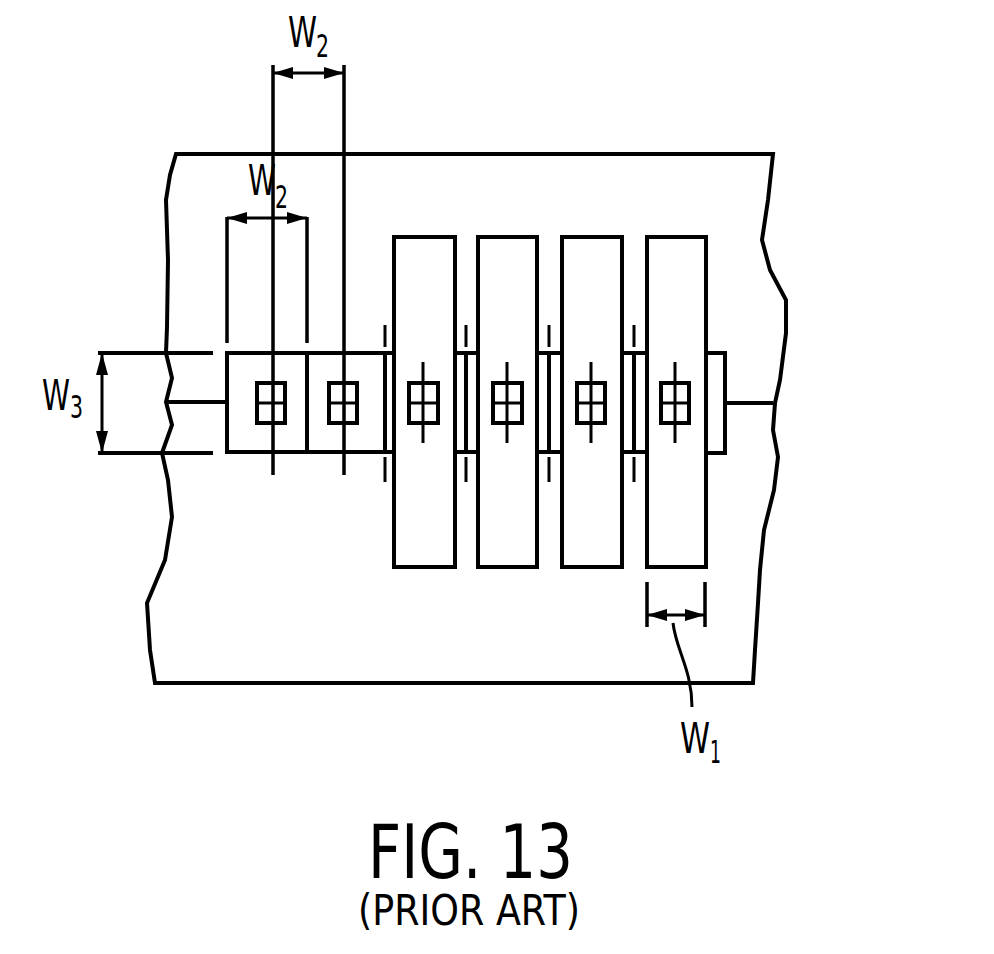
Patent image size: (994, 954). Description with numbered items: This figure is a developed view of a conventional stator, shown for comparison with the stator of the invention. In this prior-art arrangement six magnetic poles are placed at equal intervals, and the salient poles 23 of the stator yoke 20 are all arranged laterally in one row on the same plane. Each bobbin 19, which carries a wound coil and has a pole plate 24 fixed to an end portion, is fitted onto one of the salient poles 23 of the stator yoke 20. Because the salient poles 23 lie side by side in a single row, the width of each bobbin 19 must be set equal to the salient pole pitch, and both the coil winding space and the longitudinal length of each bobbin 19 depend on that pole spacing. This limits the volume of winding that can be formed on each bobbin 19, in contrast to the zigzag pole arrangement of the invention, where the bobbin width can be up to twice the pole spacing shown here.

The bobbin 19 is at (240, 443).
The stator yoke 20 is at (745, 258).
The salient pole 23 is at (593, 373).
The pole plate 24 is at (678, 253).